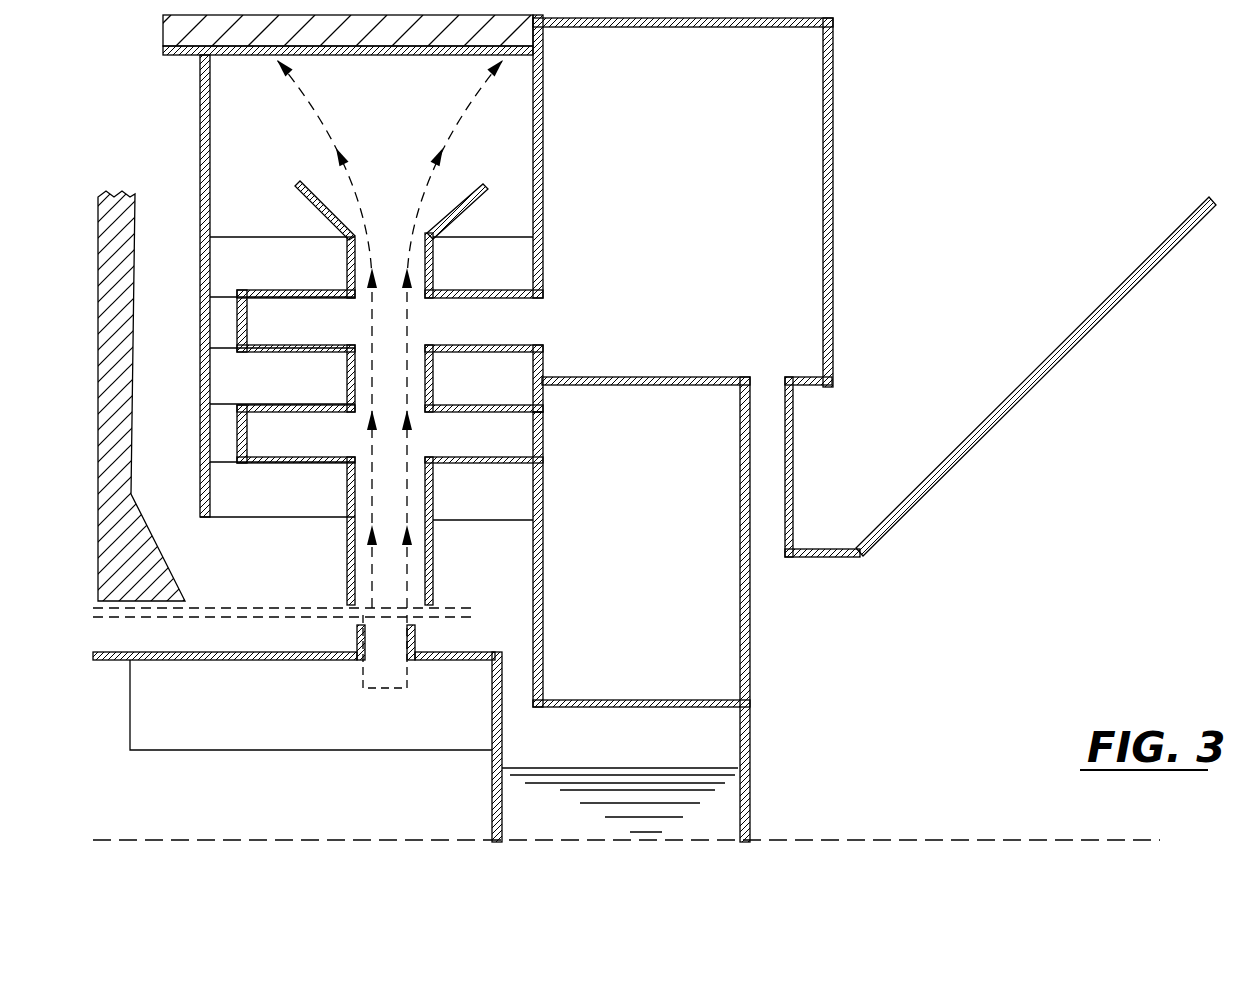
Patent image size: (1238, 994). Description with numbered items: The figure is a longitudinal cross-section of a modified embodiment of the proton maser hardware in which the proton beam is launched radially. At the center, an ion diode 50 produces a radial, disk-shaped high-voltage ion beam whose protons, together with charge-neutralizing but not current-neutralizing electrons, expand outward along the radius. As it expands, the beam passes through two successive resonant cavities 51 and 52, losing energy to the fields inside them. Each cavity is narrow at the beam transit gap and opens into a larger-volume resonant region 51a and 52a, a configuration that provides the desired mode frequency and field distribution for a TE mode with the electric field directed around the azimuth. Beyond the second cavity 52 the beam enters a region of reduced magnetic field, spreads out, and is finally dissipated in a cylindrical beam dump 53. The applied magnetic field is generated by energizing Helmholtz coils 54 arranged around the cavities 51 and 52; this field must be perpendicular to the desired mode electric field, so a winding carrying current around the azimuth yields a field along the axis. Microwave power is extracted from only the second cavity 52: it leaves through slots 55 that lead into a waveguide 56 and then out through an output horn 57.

The ion diode 50 is at (287, 750).
The resonant cavity 51 is at (528, 434).
The resonant region 51a is at (664, 598).
The resonant cavity 52 is at (524, 326).
The resonant region 52a is at (703, 163).
The cylindrical beam dump 53 is at (427, 57).
The Helmholtz coils 54 is at (497, 503).
The slots 55 is at (765, 548).
The waveguide 56 is at (822, 558).
The output horn 57 is at (1037, 385).